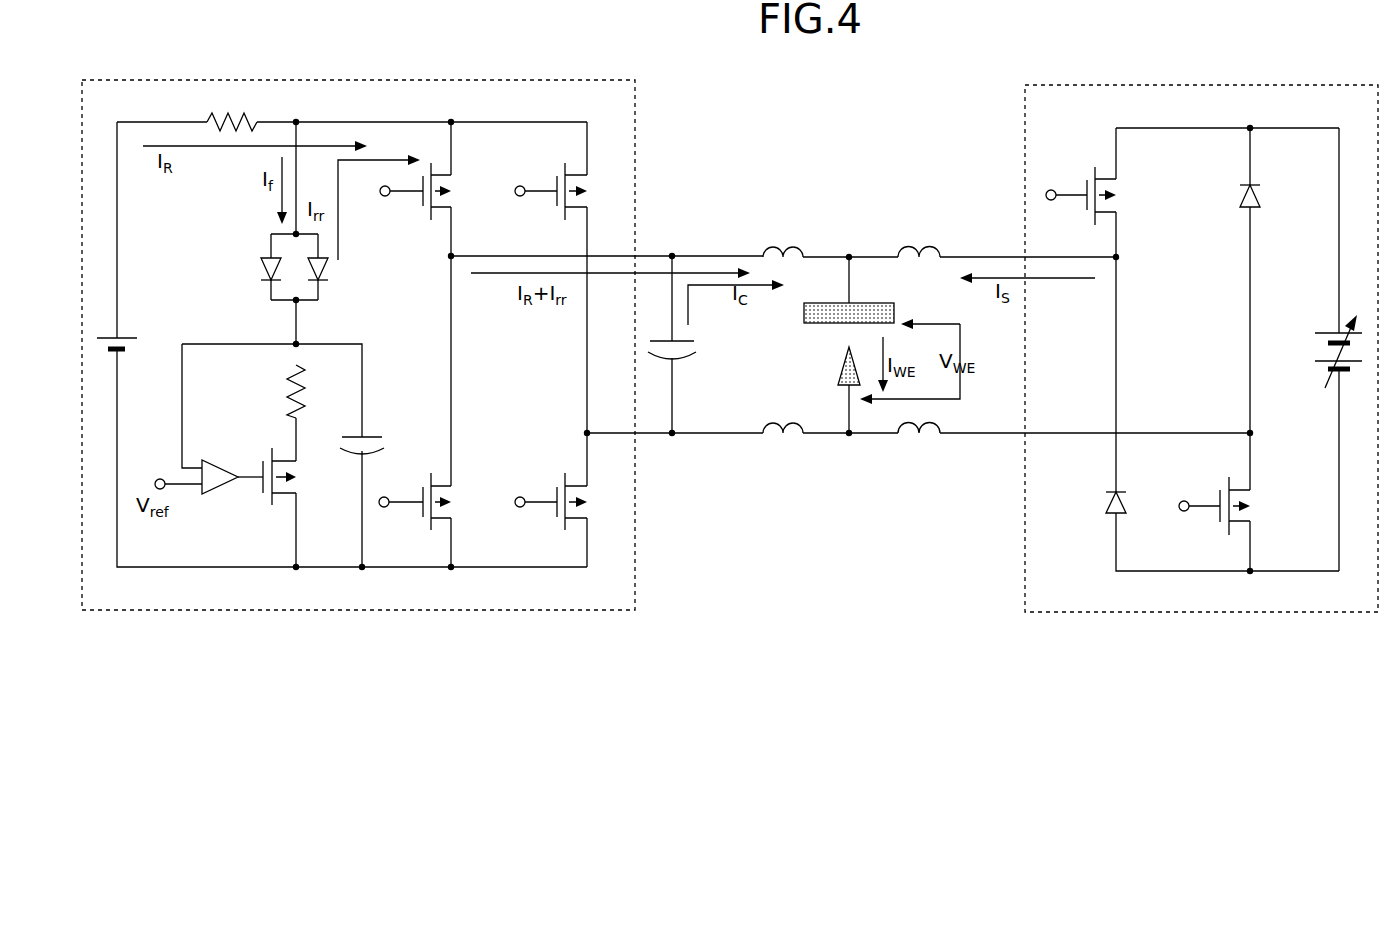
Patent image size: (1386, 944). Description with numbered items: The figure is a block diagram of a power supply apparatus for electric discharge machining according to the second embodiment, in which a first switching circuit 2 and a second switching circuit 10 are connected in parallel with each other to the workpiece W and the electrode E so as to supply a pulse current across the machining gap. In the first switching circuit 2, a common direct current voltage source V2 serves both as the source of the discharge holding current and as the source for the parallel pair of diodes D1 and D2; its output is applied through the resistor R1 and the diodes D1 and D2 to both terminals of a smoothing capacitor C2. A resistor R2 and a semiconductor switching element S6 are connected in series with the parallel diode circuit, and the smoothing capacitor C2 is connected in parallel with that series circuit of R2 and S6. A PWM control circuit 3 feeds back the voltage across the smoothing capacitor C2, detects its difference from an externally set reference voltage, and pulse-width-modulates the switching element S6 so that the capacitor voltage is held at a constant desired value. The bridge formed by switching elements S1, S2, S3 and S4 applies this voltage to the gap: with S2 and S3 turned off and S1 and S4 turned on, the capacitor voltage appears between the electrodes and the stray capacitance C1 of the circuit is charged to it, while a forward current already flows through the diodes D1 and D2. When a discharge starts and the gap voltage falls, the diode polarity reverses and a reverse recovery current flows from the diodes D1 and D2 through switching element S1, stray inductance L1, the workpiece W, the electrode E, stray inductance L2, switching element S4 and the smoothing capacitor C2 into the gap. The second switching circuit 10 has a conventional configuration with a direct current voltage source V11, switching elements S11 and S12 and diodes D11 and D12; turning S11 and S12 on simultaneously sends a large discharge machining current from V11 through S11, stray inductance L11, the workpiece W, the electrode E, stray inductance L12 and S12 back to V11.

The first switching circuit 2 is at (636, 158).
The second switching circuit 10 is at (1025, 131).
The PWM control circuit 3 is at (222, 462).
The resistor R1 is at (252, 116).
The resistor R2 is at (292, 388).
The diode D1 is at (268, 266).
The diode D2 is at (324, 268).
The common direct current voltage source V2 is at (130, 330).
The smoothing capacitor C2 is at (374, 435).
The semiconductor switching element S6 is at (282, 506).
The semiconductor switching element S1 is at (444, 190).
The semiconductor switching element S2 is at (444, 500).
The semiconductor switching element S3 is at (580, 190).
The semiconductor switching element S4 is at (580, 500).
The stray capacitance C1 is at (700, 350).
The stray inductance L1 is at (790, 246).
The stray inductance L2 is at (785, 443).
The stray inductance L11 is at (924, 246).
The stray inductance L12 is at (918, 443).
The workpiece W is at (895, 310).
The electrode E is at (846, 370).
The semiconductor switching element S11 is at (1108, 194).
The semiconductor switching element S12 is at (1244, 504).
The diode D11 is at (1262, 190).
The diode D12 is at (1128, 498).
The direct current voltage source V11 is at (1322, 350).